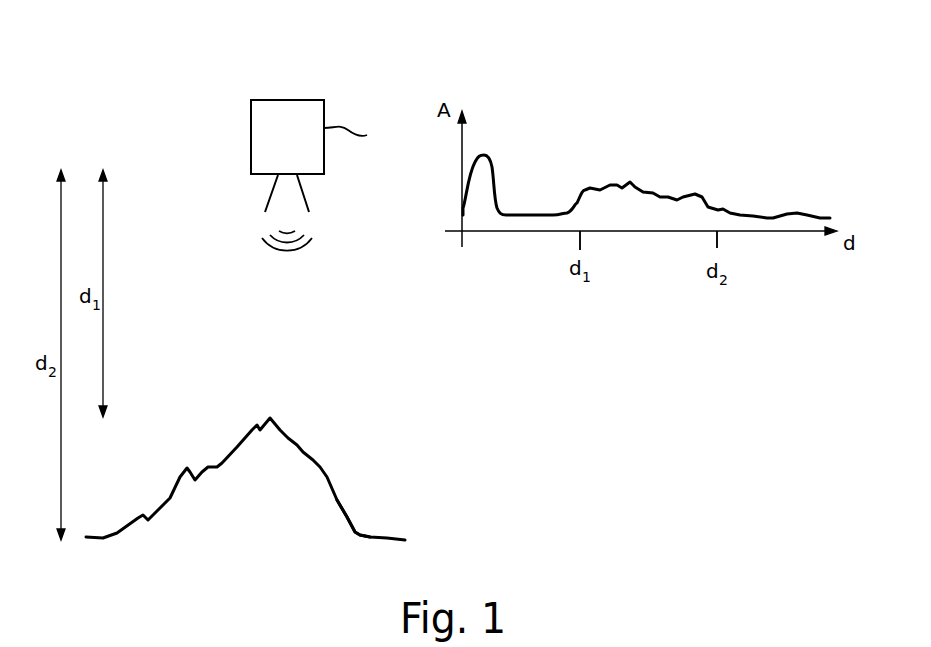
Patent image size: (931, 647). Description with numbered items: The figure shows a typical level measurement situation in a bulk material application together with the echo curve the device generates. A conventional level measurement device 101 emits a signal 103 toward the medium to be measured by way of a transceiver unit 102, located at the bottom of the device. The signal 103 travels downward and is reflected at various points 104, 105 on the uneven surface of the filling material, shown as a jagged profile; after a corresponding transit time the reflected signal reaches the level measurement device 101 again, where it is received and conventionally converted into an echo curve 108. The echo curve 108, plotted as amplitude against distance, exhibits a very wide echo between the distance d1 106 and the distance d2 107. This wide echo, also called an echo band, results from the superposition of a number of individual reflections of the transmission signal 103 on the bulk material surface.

The level measurement device 101 is at (281, 100).
The transceiver unit 102 is at (306, 187).
The signal 103 is at (295, 250).
The reflection point 104 is at (270, 417).
The reflection point 105 is at (357, 528).
The distance d1 106 is at (583, 232).
The distance d2 107 is at (723, 232).
The echo curve 108 is at (520, 215).